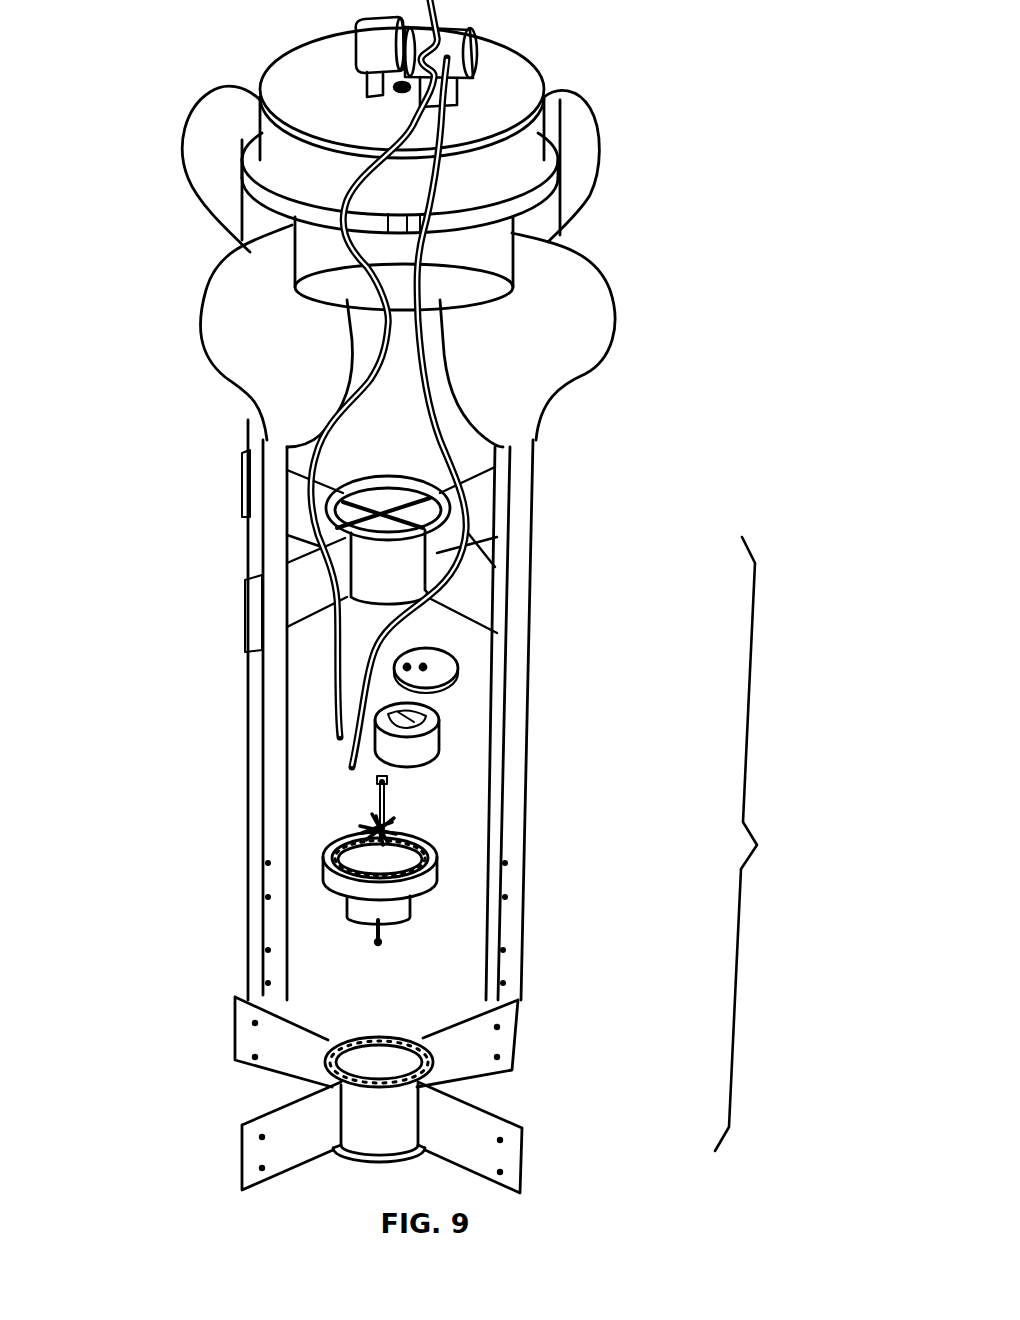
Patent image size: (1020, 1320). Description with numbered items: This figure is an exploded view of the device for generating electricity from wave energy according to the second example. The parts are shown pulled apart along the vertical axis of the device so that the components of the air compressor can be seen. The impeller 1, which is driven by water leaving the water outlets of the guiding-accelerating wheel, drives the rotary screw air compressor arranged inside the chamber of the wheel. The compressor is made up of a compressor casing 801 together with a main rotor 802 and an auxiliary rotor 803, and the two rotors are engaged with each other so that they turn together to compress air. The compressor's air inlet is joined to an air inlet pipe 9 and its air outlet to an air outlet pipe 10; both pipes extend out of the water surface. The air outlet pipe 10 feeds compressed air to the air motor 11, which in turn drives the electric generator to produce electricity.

The impeller 1 is at (437, 883).
The air inlet pipe 9 is at (367, 270).
The air outlet pipe 10 is at (428, 254).
The air motor 11 is at (452, 43).
The compressor casing 801 is at (405, 748).
The main rotor 802 is at (393, 825).
The auxiliary rotor 803 is at (358, 823).